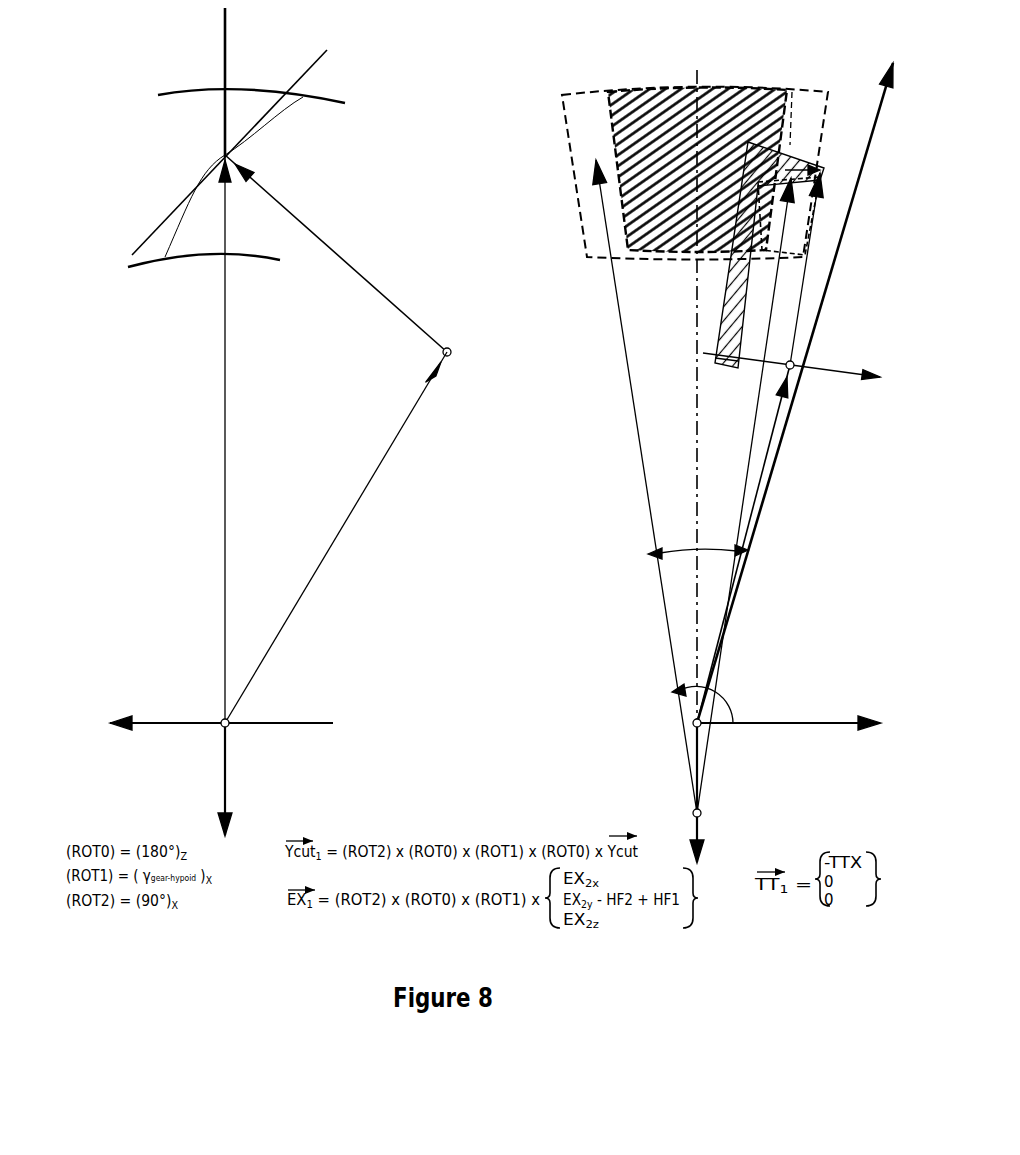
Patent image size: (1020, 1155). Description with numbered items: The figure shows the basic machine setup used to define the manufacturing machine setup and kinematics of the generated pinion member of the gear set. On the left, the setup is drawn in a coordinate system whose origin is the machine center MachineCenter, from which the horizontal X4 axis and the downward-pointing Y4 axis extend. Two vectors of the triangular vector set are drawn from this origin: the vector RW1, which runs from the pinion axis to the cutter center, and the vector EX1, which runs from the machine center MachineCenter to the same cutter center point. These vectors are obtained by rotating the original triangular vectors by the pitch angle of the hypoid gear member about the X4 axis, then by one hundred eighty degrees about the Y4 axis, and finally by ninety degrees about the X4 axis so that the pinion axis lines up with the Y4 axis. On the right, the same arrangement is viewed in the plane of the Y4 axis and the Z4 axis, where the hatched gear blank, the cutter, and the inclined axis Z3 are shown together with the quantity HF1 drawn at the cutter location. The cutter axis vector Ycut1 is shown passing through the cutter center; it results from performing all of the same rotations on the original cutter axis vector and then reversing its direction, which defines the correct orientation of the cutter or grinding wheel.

The rotated cutter vector RW1 is at (345, 313).
The rotated eccentricity vector EX1 is at (310, 461).
The X4-axis X4 is at (221, 740).
The Y4-axis Y4 is at (477, 793).
The Z axis of coordinate system 4 Z4 is at (787, 738).
The Z axis of coordinate system 3 Z3 is at (795, 393).
The hypoid offset vector HF1 is at (815, 169).
The cutter axis vector Ycut1 is at (873, 340).
The machine center MachineCenter is at (220, 720).